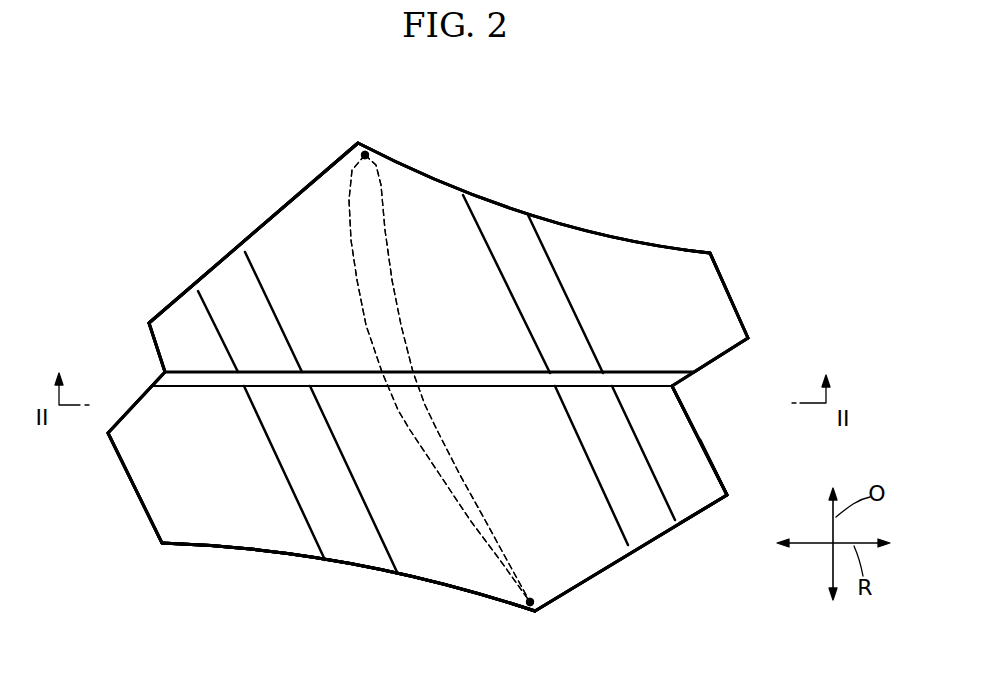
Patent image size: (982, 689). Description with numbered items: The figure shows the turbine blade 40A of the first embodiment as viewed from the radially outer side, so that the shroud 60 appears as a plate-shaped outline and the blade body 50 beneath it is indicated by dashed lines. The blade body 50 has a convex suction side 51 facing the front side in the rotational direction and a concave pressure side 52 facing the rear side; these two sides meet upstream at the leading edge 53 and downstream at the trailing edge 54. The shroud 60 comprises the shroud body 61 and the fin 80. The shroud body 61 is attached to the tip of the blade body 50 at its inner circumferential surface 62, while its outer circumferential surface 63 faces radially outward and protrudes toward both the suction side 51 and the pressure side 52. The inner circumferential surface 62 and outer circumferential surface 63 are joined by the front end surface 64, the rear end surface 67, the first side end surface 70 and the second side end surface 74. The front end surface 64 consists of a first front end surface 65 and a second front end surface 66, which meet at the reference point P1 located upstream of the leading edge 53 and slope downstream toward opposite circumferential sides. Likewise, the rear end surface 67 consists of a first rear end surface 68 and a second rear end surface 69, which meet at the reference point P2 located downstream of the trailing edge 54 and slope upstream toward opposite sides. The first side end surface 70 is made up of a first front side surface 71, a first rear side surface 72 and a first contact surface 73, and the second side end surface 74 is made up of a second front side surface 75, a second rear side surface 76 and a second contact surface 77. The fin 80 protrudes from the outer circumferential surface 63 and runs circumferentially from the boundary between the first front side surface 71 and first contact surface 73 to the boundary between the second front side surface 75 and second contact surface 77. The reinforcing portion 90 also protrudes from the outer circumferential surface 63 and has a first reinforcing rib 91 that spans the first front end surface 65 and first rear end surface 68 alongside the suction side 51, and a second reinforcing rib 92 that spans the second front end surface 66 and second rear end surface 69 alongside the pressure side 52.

The turbine blade 40A is at (659, 148).
The blade body 50 is at (401, 235).
The suction side 51 is at (357, 280).
The pressure side 52 is at (400, 297).
The leading edge 53 is at (368, 152).
The trailing edge 54 is at (533, 603).
The shroud 60 is at (680, 234).
The shroud body 61 is at (643, 230).
The inner circumferential surface 62 is at (702, 272).
The outer circumferential surface 63 is at (603, 258).
The front end surface 64 is at (284, 198).
The first front end surface 65 is at (257, 232).
The second front end surface 66 is at (555, 218).
The rear end surface 67 is at (248, 565).
The first rear end surface 68 is at (427, 583).
The second rear end surface 69 is at (695, 517).
The first side end surface 70 is at (110, 467).
The first front side surface 71 is at (153, 338).
The first rear side surface 72 is at (147, 517).
The first contact surface 73 is at (145, 393).
The second side end surface 74 is at (715, 444).
The second front side surface 75 is at (738, 308).
The second rear side surface 76 is at (722, 480).
The second contact surface 77 is at (722, 358).
The fin 80 is at (508, 375).
The reinforcing portion 90 is at (369, 581).
The first reinforcing rib 91 is at (283, 443).
The second reinforcing rib 92 is at (610, 475).
The reference point P1 is at (358, 142).
The reference point P2 is at (535, 617).